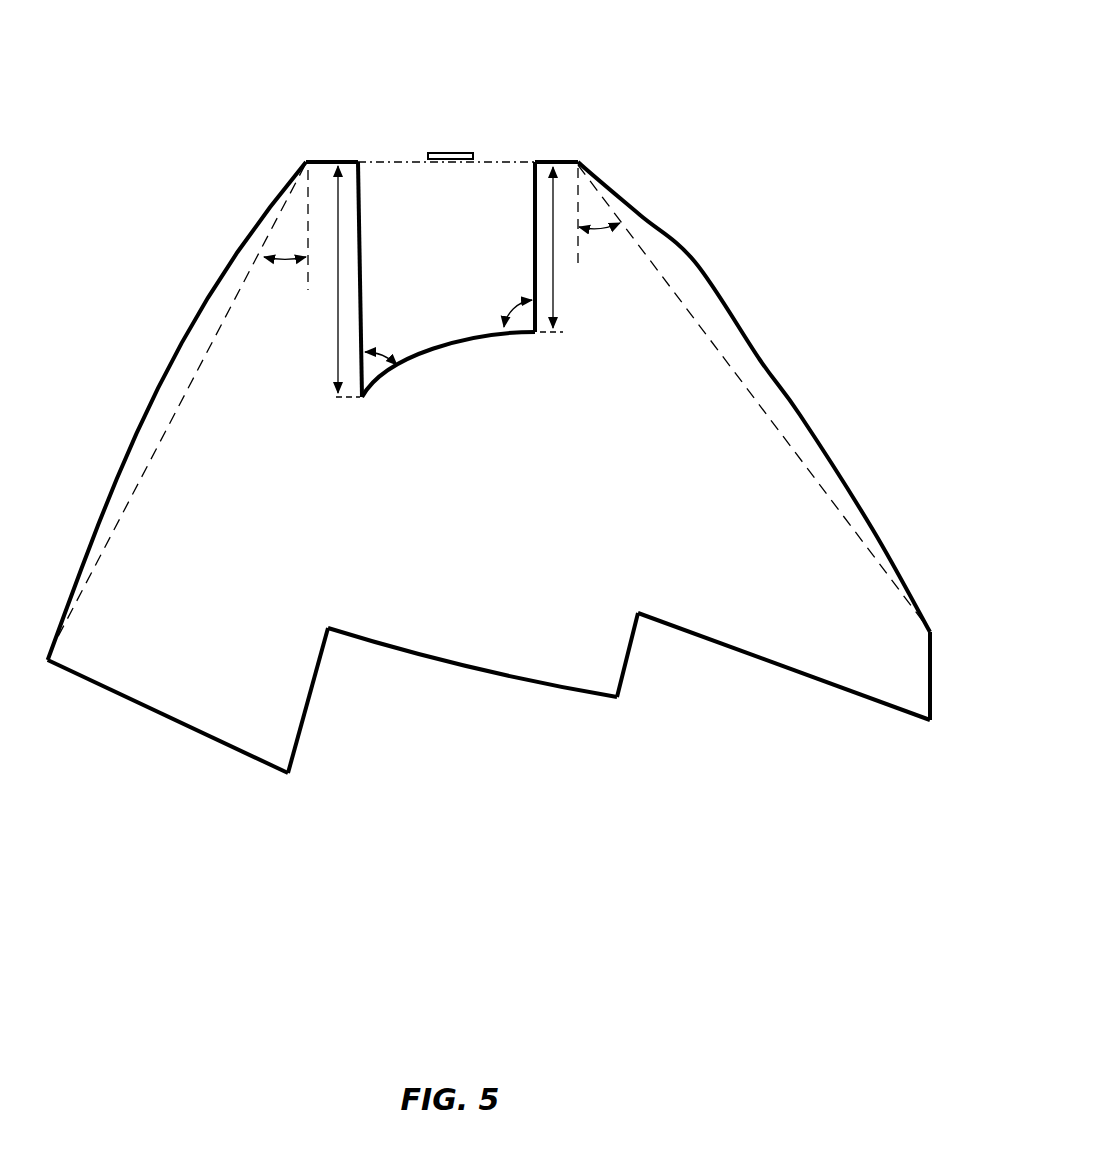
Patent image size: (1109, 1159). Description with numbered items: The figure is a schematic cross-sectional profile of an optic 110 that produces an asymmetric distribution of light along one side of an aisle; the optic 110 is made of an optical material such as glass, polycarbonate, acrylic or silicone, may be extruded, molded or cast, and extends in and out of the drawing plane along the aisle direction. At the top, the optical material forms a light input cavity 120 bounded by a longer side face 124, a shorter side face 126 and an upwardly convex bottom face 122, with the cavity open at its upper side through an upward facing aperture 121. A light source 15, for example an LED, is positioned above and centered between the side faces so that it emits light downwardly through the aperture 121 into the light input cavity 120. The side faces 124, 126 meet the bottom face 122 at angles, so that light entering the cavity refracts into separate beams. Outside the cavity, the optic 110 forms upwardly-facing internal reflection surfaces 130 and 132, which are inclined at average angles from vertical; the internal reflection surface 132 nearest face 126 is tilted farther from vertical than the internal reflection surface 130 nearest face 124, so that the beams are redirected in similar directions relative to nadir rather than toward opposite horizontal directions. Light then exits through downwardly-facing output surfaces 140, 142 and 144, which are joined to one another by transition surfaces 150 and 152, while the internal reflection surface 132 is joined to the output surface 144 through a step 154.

The optic 110 is at (707, 87).
The light input cavity 120 is at (406, 178).
The light source 15 is at (450, 152).
The upward facing aperture 121 is at (491, 157).
The side face 124 is at (366, 213).
The side face 126 is at (532, 234).
The bottom face 122 is at (451, 342).
The internal reflection surface 130 is at (217, 262).
The internal reflection surface 132 is at (701, 275).
The output surface 140 is at (146, 710).
The output surface 142 is at (456, 672).
The output surface 144 is at (780, 667).
The transition surface 150 is at (315, 693).
The transition surface 152 is at (633, 651).
The step 154 is at (935, 676).